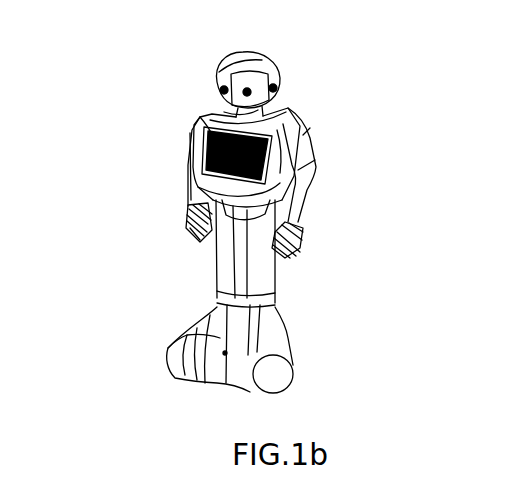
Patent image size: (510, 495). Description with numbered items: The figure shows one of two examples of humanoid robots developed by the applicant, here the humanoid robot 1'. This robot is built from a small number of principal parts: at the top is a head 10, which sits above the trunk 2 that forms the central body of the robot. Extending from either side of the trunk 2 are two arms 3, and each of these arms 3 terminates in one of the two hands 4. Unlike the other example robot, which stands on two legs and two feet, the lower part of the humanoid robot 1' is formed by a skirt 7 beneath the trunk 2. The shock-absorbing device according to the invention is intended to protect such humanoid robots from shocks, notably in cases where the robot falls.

The humanoid robot 1' is at (203, 121).
The head 10 is at (268, 57).
The trunk 2 is at (285, 111).
The arms 3 is at (308, 157).
The hands 4 is at (307, 225).
The skirt 7 is at (270, 303).